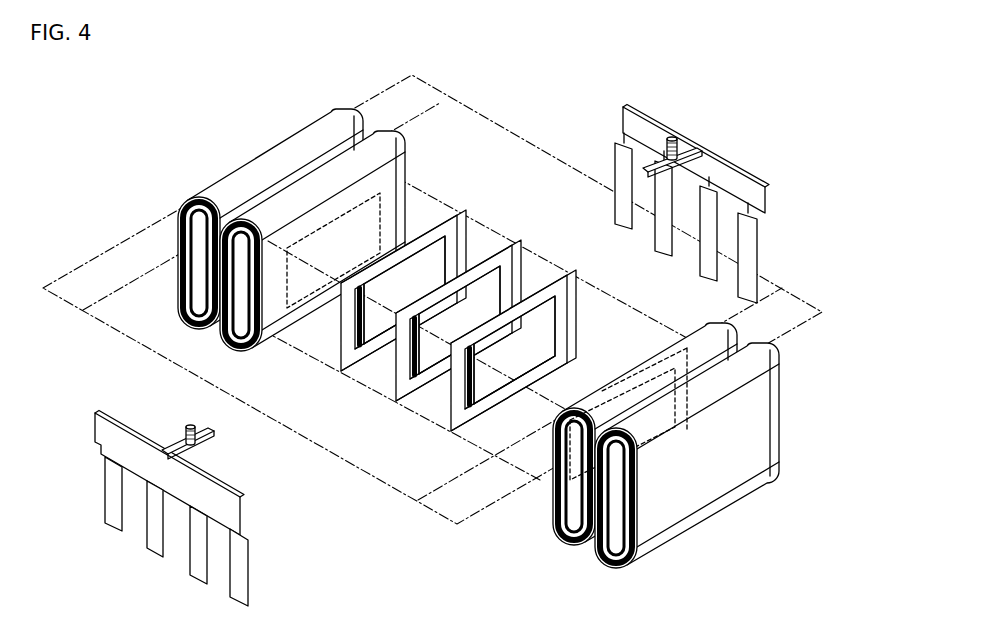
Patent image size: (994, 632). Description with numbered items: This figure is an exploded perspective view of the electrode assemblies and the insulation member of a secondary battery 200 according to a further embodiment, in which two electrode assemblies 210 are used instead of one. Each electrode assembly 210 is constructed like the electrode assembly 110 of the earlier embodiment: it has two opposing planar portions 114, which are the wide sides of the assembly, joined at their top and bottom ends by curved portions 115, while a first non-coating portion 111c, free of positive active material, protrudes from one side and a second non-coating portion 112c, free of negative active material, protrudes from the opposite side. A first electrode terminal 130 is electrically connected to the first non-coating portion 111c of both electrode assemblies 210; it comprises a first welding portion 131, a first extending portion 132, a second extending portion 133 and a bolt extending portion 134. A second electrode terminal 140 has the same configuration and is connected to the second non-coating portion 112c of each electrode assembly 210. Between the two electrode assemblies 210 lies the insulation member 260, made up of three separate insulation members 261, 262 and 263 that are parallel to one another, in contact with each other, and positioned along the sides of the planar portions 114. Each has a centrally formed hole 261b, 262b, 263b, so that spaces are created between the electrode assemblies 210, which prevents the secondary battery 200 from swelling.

The electrode assembly 110 is at (478, 339).
The first non-coating portion 111c is at (279, 352).
The second non-coating portion 112c is at (337, 111).
The planar portion 114 is at (300, 289).
The curved portion 115 is at (283, 148).
The first electrode terminal 130 is at (149, 499).
The first welding portion 131 is at (108, 497).
The first extending portion 132 is at (100, 433).
The second extending portion 133 is at (173, 443).
The bolt extending portion 134 is at (194, 407).
The second electrode terminal 140 is at (674, 137).
The secondary battery 200 is at (710, 197).
The electrode assembly 210 is at (510, 339).
The insulation member 260 is at (441, 318).
The insulation member 261 is at (386, 290).
The hole 261b is at (339, 352).
The insulation member 262 is at (441, 323).
The hole 262b is at (394, 386).
The insulation member 263 is at (496, 354).
The hole 263b is at (449, 417).